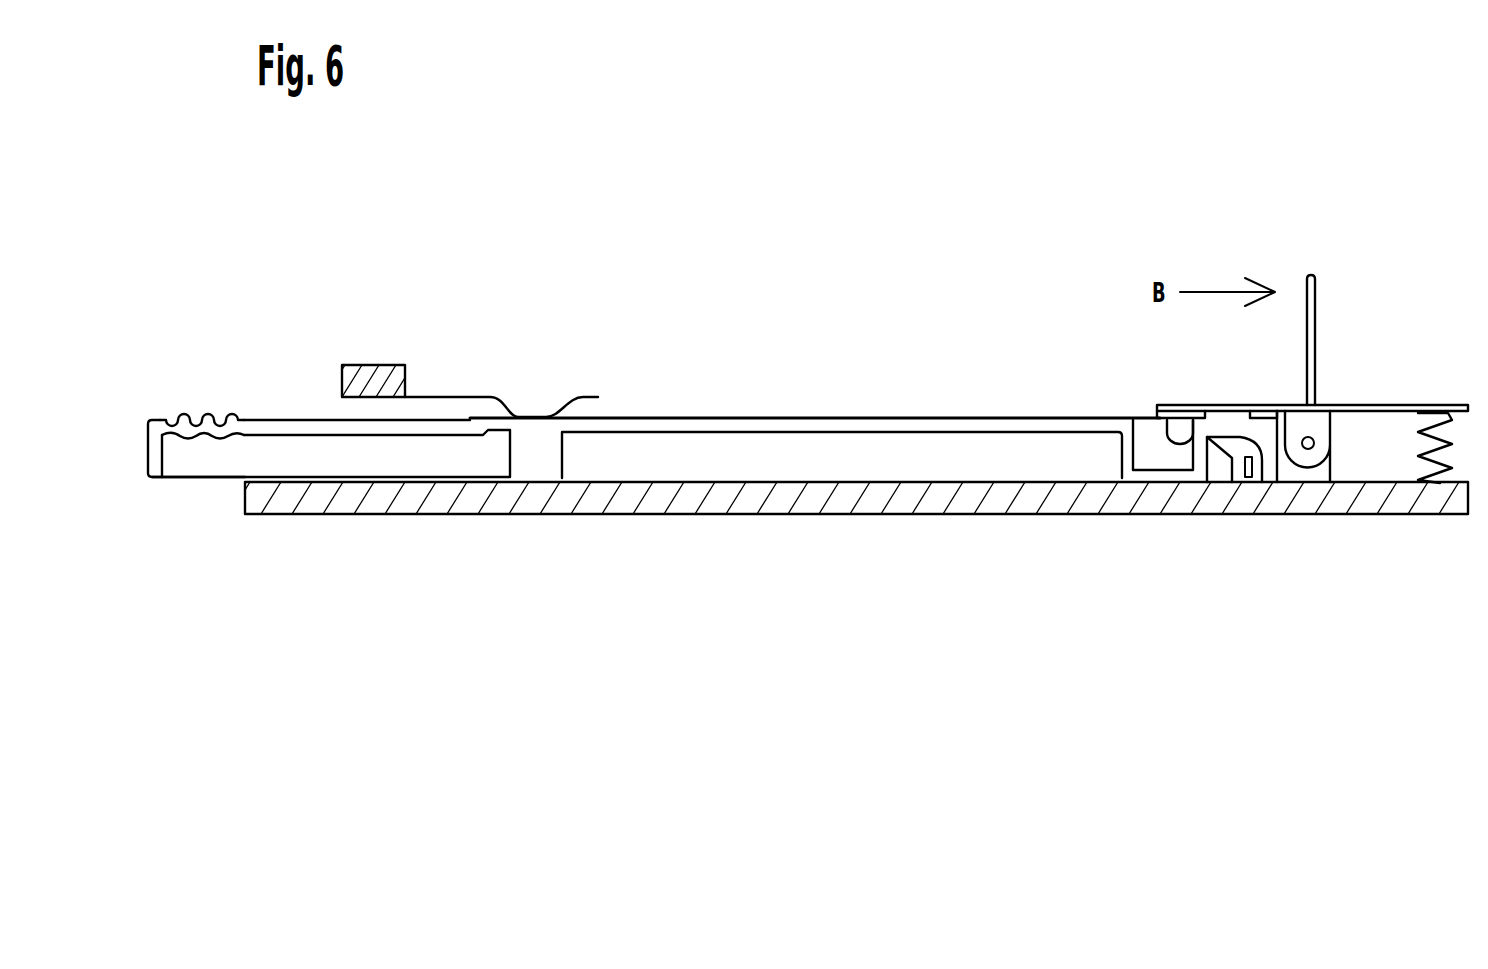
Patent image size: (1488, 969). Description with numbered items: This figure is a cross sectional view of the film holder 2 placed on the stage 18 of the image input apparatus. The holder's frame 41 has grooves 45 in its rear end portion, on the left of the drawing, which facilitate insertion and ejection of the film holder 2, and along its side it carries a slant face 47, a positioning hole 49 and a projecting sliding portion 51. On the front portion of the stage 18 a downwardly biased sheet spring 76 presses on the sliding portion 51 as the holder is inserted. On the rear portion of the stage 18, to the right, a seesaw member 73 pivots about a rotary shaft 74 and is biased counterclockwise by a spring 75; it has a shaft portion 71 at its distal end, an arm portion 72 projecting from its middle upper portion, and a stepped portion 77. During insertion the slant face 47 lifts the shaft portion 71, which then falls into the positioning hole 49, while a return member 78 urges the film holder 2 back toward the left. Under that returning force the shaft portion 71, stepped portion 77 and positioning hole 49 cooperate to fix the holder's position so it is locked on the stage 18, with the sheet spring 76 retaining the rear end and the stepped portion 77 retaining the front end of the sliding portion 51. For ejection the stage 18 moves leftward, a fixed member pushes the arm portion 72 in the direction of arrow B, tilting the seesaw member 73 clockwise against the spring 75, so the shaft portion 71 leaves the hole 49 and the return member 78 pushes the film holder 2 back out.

The film holder 2 is at (191, 500).
The stage 18 is at (652, 514).
The frame 41 is at (312, 418).
The grooves 45 is at (202, 418).
The slant face 47 is at (1268, 440).
The positioning hole 49 is at (1157, 452).
The sliding portion 51 is at (667, 418).
The shaft portion 71 is at (1187, 432).
The arm portion 72 is at (1317, 320).
The seesaw member 73 is at (1394, 390).
The rotary shaft 74 is at (1308, 450).
The spring 75 is at (1418, 453).
The sheet spring 76 is at (430, 397).
The stepped portion 77 is at (1212, 433).
The return member 78 is at (1238, 433).